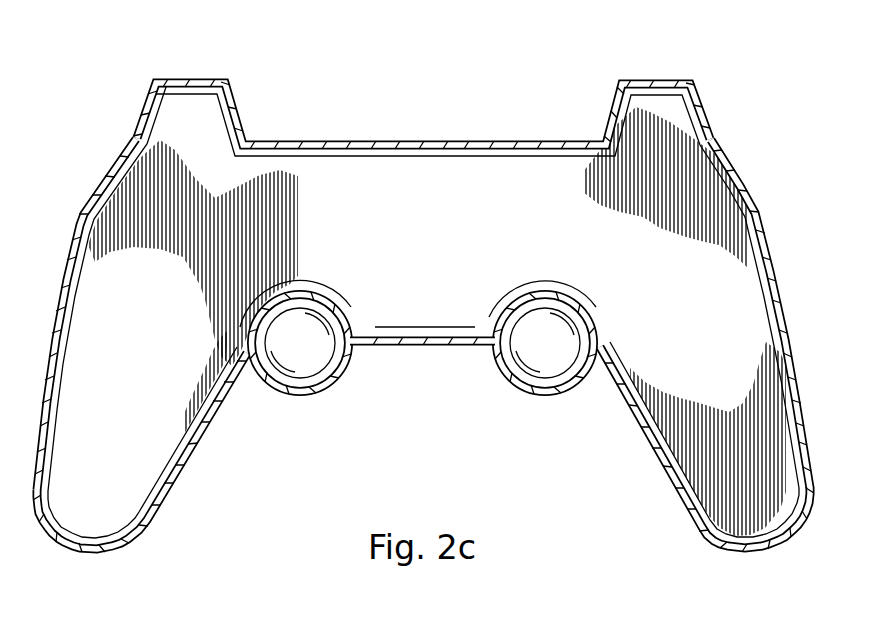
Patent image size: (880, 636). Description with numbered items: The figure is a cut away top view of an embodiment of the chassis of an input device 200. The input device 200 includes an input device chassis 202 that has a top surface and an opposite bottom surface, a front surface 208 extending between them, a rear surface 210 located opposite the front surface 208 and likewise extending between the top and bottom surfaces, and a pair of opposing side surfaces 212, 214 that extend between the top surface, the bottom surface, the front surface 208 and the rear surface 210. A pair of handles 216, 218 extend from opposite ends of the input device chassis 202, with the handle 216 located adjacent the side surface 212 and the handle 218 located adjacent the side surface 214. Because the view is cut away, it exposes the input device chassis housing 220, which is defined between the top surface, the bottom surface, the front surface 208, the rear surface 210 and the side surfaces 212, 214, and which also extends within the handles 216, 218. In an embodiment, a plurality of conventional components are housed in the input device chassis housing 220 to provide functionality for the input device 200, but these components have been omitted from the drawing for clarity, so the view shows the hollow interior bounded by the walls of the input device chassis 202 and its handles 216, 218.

The input device 200 is at (98, 95).
The input device chassis 202 is at (742, 153).
The front surface 208 is at (446, 346).
The rear surface 210 is at (460, 139).
The side surface 212 is at (82, 204).
The side surface 214 is at (762, 210).
The handle 216 is at (77, 549).
The handle 218 is at (768, 550).
The input device chassis housing 220 is at (442, 251).